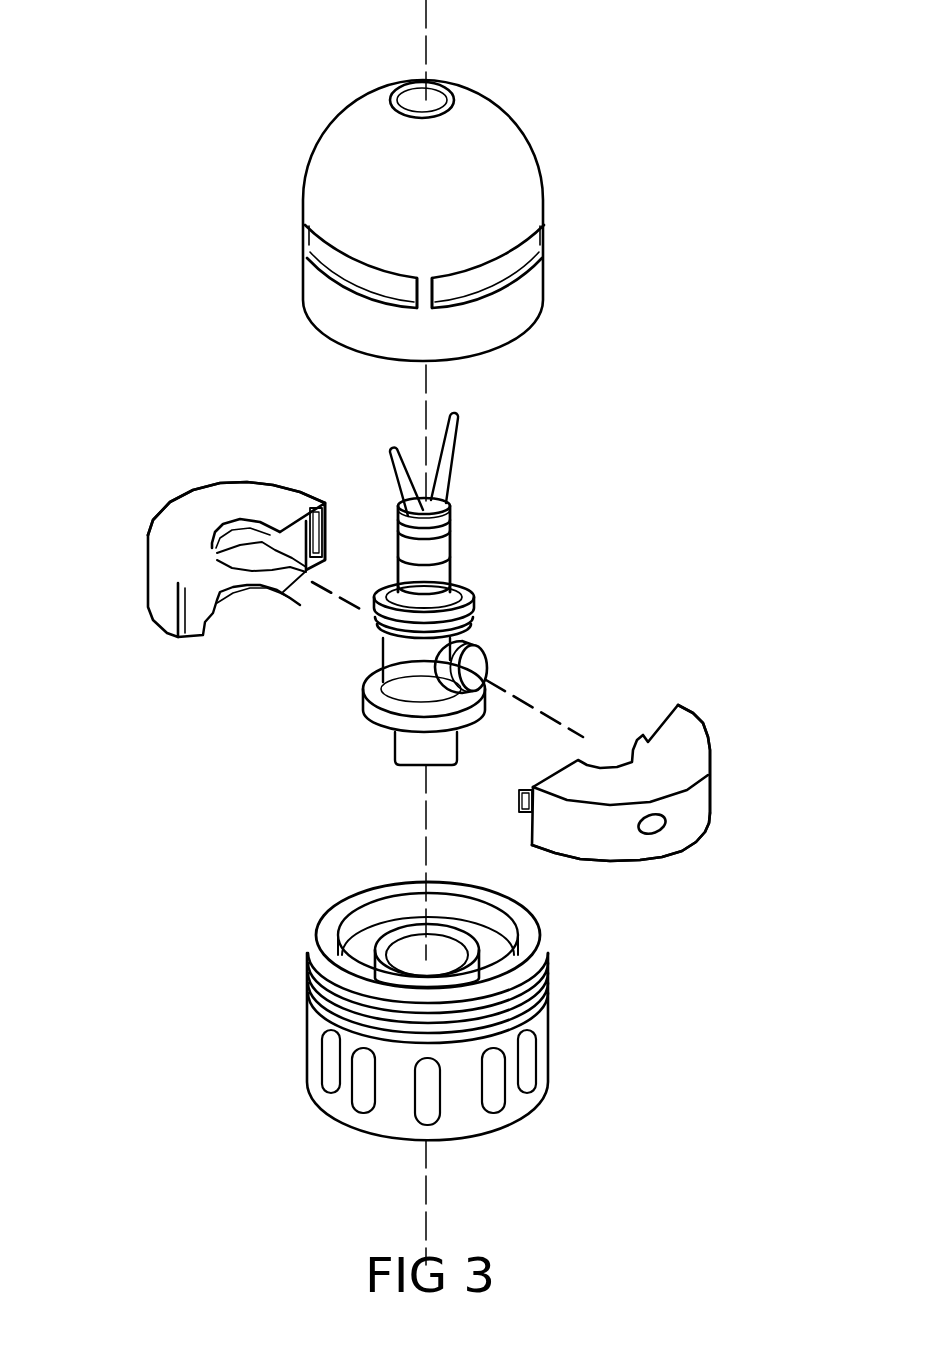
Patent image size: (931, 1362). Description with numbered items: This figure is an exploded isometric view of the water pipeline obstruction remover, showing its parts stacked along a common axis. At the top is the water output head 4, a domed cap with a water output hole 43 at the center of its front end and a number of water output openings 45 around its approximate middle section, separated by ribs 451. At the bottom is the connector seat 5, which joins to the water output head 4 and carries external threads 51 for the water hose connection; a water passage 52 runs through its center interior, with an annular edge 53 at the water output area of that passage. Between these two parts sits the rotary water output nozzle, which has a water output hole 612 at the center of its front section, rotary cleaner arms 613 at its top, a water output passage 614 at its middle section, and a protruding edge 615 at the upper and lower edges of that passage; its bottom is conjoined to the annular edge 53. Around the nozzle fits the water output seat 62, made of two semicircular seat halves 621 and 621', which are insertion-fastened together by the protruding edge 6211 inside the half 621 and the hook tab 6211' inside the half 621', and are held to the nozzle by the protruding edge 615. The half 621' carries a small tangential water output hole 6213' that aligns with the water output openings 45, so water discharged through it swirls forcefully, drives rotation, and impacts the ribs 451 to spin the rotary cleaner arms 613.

The water output head 4 is at (561, 108).
The water output hole 43 is at (428, 100).
The water output openings 45 is at (500, 271).
The ribs 451 is at (415, 291).
The water output hole 612 is at (452, 515).
The rotary cleaner arms 613 is at (456, 441).
The water output passage 614 is at (476, 667).
The protruding edge 615 is at (474, 608).
The water output seat 62 is at (636, 666).
The semicircular seat half 621 is at (196, 556).
The protruding edge 6211 is at (275, 491).
The semicircular seat half 621' is at (664, 783).
The hook tab 6211' is at (481, 817).
The water output hole 6213' is at (693, 854).
The connector seat 5 is at (262, 1031).
The external threads 51 is at (545, 982).
The water passage 52 is at (450, 957).
The annular edge 53 is at (377, 952).